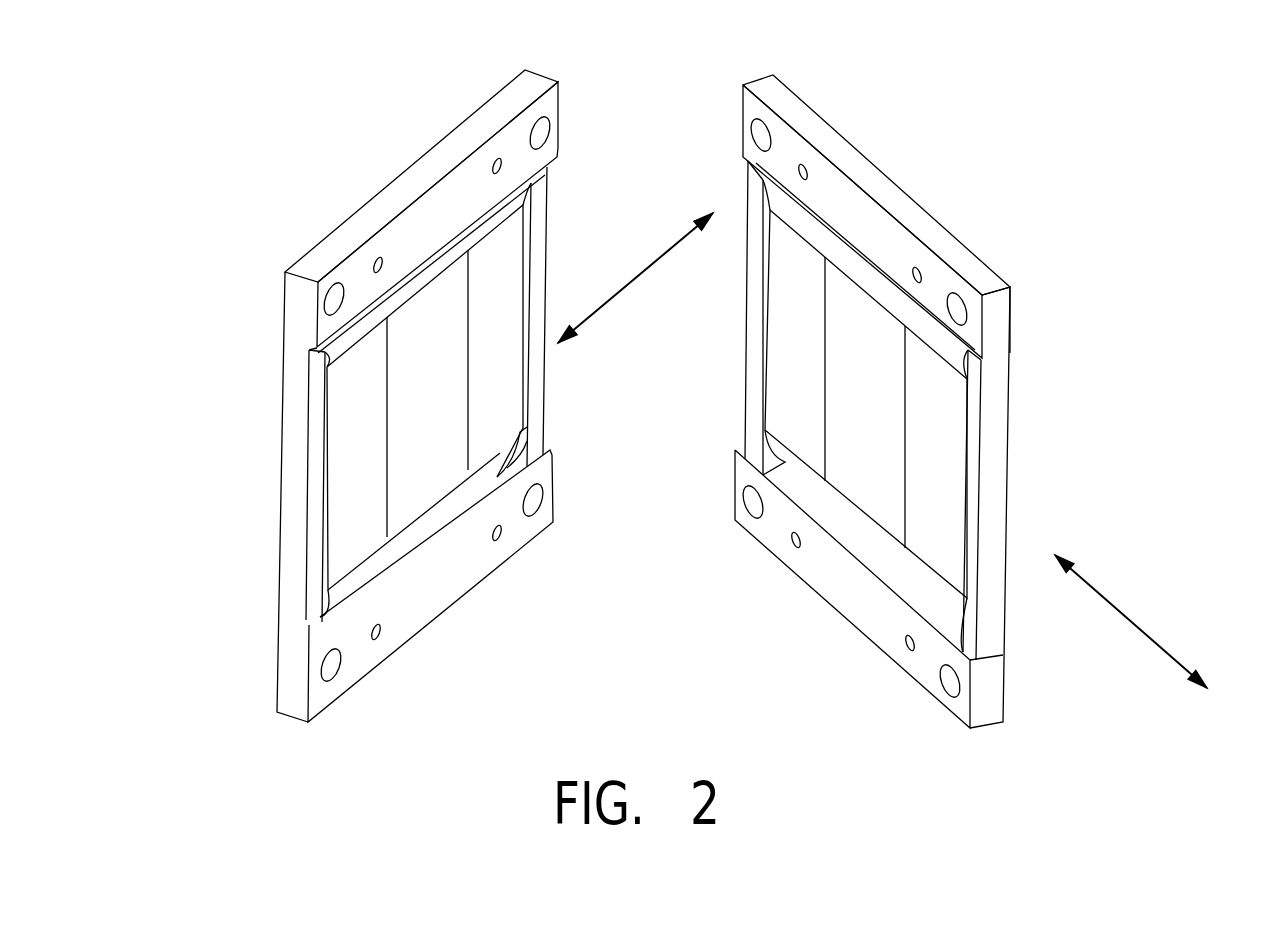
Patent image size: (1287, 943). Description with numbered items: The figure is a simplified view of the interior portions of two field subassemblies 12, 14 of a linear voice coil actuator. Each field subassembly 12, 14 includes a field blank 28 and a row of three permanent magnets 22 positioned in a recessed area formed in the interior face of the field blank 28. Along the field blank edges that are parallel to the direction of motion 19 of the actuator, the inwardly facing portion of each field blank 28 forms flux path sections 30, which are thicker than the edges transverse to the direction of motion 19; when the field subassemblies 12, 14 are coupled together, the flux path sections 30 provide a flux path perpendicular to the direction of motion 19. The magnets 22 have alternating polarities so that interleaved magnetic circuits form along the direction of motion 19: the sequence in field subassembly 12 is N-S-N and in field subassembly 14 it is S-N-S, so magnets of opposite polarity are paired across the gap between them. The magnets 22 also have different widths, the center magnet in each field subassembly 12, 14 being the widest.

The field subassembly 12 is at (447, 131).
The field subassembly 14 is at (855, 140).
The direction of motion 19 is at (638, 278).
The permanent magnets 22 is at (367, 540).
The field blank 28 is at (290, 518).
The flux path sections 30 is at (307, 304).